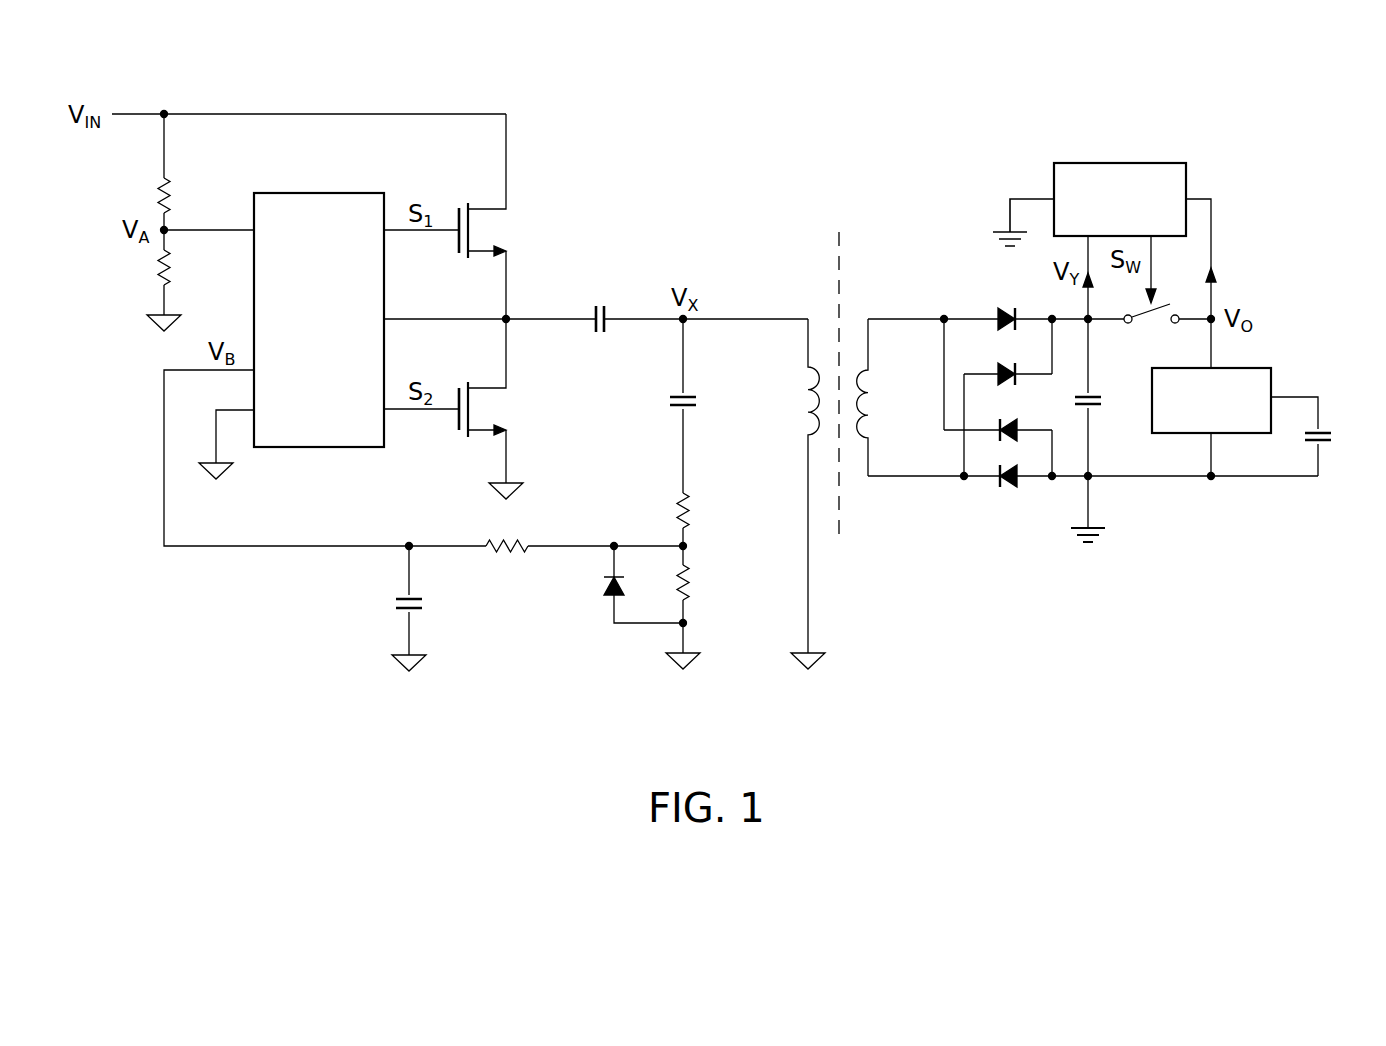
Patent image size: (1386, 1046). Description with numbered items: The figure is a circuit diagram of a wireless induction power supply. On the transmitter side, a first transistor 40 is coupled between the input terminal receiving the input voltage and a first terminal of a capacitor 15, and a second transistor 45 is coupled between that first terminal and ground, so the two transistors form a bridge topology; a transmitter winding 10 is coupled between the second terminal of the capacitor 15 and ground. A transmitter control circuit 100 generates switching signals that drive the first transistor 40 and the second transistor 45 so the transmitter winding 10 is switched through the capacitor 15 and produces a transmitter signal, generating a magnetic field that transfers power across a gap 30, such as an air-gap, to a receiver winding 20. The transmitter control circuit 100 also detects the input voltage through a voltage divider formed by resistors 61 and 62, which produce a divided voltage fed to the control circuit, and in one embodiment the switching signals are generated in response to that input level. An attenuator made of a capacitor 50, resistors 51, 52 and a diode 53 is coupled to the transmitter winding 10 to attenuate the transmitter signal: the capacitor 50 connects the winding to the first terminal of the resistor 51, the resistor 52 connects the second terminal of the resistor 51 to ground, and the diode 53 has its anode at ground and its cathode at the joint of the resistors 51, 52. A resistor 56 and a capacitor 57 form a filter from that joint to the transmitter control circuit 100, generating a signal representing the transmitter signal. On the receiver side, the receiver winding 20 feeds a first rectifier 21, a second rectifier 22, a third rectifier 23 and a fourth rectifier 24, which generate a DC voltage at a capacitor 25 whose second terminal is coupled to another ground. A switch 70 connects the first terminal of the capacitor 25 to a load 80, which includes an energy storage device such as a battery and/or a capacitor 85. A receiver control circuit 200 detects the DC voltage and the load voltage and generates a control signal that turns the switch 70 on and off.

The transmitter winding 10 is at (795, 486).
The capacitor 15 is at (601, 305).
The receiver winding 20 is at (882, 397).
The first rectifier 21 is at (1005, 304).
The second rectifier 22 is at (1008, 360).
The third rectifier 23 is at (998, 415).
The fourth rectifier 24 is at (1005, 491).
The capacitor 25 is at (1103, 403).
The gap 30 is at (841, 371).
The first transistor 40 is at (502, 216).
The second transistor 45 is at (502, 401).
The capacitor 50 is at (700, 404).
The resistor 51 is at (704, 510).
The resistor 52 is at (704, 582).
The diode 53 is at (624, 584).
The resistor 56 is at (507, 564).
The capacitor 57 is at (427, 600).
The resistor 61 is at (183, 195).
The resistor 62 is at (183, 267).
The switch 70 is at (1167, 328).
The load 80 is at (1212, 385).
The capacitor 85 is at (1319, 436).
The transmitter control circuit 100 is at (319, 320).
The receiver control circuit 200 is at (1120, 199).